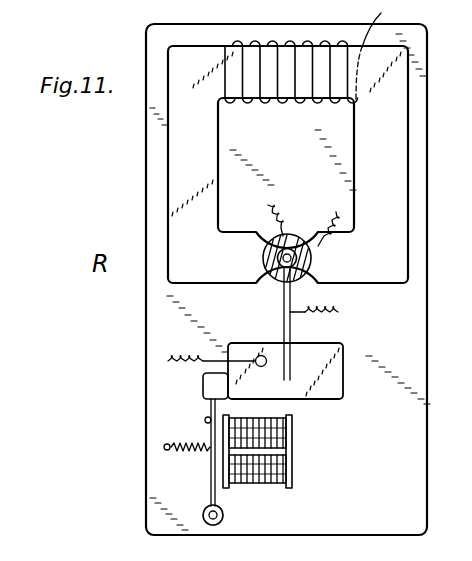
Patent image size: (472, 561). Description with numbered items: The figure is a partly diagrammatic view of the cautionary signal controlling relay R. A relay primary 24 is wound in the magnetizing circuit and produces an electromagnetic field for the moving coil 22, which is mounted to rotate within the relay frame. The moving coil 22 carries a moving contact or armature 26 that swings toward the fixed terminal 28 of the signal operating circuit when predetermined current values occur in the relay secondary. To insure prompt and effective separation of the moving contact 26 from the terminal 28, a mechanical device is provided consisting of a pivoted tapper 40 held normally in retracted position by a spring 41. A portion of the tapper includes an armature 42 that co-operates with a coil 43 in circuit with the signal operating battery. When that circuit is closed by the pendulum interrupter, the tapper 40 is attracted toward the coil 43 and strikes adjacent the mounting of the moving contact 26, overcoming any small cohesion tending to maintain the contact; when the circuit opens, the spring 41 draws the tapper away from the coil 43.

The moving coil 22 is at (288, 233).
The relay primary 24 is at (322, 104).
The moving contact 26 is at (284, 323).
The fixed terminal 28 is at (262, 368).
The pivoted tapper 40 is at (203, 383).
The spring 41 is at (186, 455).
The armature 42 is at (208, 406).
The coil 43 is at (257, 481).